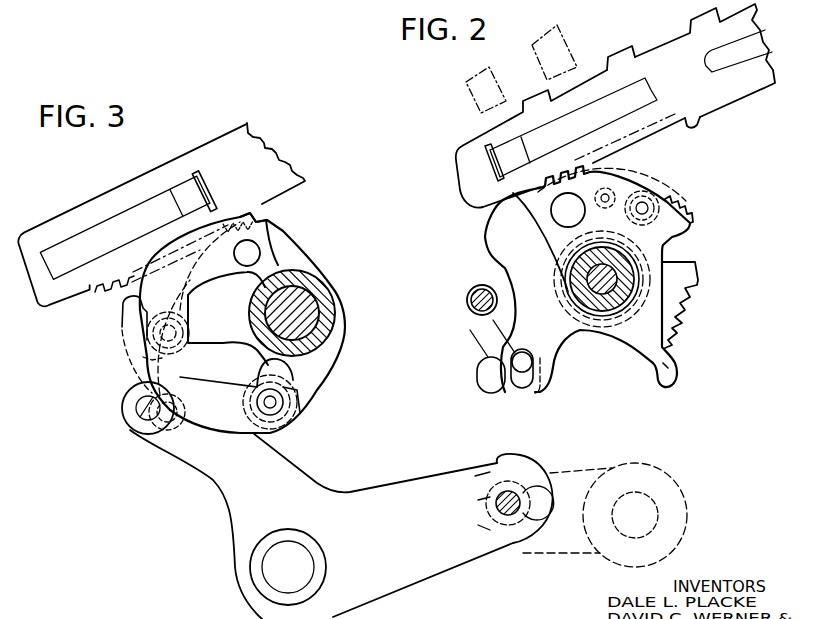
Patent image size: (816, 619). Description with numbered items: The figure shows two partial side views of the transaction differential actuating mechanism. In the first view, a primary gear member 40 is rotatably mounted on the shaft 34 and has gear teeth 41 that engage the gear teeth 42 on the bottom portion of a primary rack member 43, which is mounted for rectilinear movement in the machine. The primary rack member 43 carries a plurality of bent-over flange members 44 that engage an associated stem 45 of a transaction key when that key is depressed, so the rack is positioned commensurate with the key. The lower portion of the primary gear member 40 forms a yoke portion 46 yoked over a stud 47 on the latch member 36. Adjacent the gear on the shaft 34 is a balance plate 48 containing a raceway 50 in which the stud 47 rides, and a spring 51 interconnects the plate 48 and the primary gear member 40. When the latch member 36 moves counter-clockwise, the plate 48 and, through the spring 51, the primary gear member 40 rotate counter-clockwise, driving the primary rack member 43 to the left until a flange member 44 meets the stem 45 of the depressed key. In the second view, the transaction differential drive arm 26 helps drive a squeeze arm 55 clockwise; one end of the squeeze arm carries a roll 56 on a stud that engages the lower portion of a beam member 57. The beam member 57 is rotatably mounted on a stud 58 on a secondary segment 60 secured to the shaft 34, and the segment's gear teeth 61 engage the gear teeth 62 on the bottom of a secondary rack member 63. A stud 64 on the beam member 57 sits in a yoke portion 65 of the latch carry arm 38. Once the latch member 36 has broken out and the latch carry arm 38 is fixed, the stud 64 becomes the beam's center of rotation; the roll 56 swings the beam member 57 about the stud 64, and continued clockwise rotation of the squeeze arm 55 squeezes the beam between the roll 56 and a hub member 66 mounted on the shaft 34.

In FIG. 3, the transaction differential drive arm 26 is at (667, 556).
In FIG. 3, the shaft 34 is at (312, 300).
In FIG. 2, the shaft 34 is at (620, 291).
In FIG. 3, the latch member 36 is at (143, 357).
In FIG. 2, the latch member 36 is at (475, 327).
In FIG. 3, the latch carry arm 38 is at (315, 268).
In FIG. 2, the primary gear member 40 is at (542, 328).
In FIG. 2, the gear teeth 41 is at (692, 223).
In FIG. 2, the gear teeth 42 is at (695, 125).
In FIG. 2, the primary rack member 43 is at (735, 100).
In FIG. 2, the bent-over flange member 44 is at (616, 52).
In FIG. 2, the stem 45 is at (481, 100).
In FIG. 2, the yoke portion 46 is at (552, 382).
In FIG. 2, the stud 47 is at (527, 395).
In FIG. 2, the balance plate 48 is at (492, 222).
In FIG. 2, the raceway 50 is at (478, 353).
In FIG. 2, the spring 51 is at (685, 315).
In FIG. 3, the squeeze arm 55 is at (437, 570).
In FIG. 3, the roll 56 is at (122, 406).
In FIG. 3, the beam member 57 is at (125, 306).
In FIG. 3, the stud 58 is at (255, 250).
In FIG. 3, the secondary segment 60 is at (278, 262).
In FIG. 3, the gear teeth 61 is at (255, 216).
In FIG. 3, the gear teeth 62 is at (99, 298).
In FIG. 3, the secondary rack member 63 is at (198, 153).
In FIG. 3, the stud 64 is at (298, 389).
In FIG. 3, the yoke portion 65 is at (290, 372).
In FIG. 3, the hub member 66 is at (333, 325).